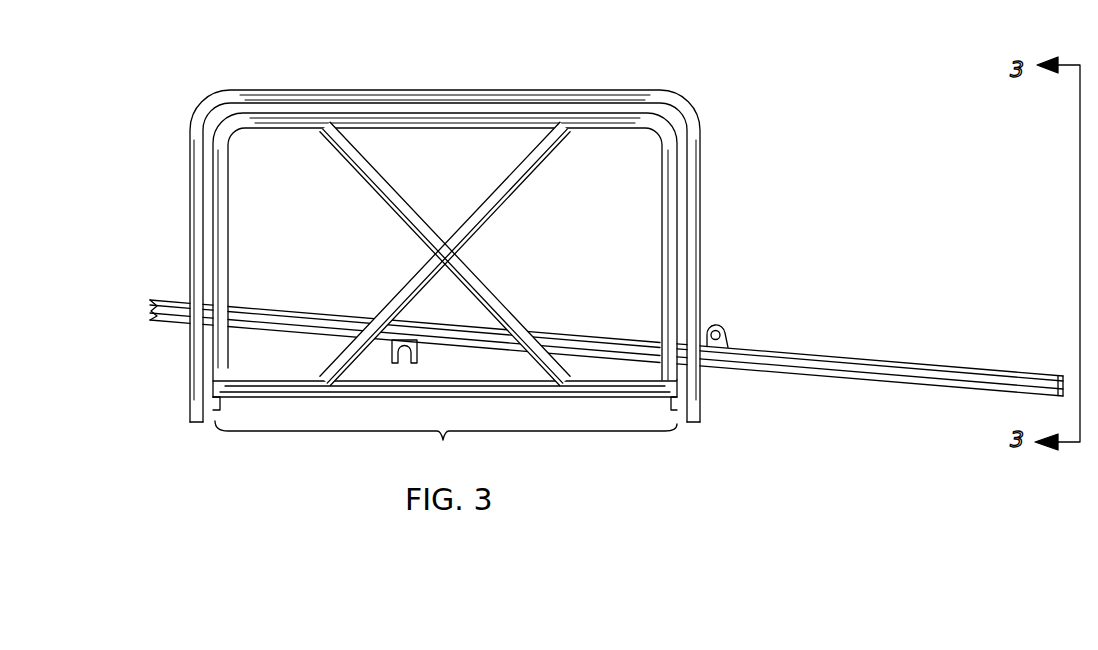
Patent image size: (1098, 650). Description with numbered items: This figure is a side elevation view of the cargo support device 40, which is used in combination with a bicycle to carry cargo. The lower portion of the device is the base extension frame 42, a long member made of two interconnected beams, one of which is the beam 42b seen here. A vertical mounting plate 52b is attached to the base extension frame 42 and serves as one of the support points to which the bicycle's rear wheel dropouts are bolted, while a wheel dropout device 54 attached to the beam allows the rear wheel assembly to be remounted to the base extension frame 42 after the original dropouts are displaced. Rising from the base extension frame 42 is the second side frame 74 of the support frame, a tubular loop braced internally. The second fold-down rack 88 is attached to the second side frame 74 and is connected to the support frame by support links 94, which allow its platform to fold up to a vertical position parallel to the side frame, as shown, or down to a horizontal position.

The cargo support device 40 is at (420, 87).
The second side frame 74 is at (615, 97).
The second fold-down rack 88 is at (667, 193).
The wheel dropout device 54 is at (408, 348).
The vertical mounting plate 52b is at (721, 327).
The base extension frame 42 is at (832, 357).
The beam 42b is at (917, 373).
The support link 94 is at (445, 426).